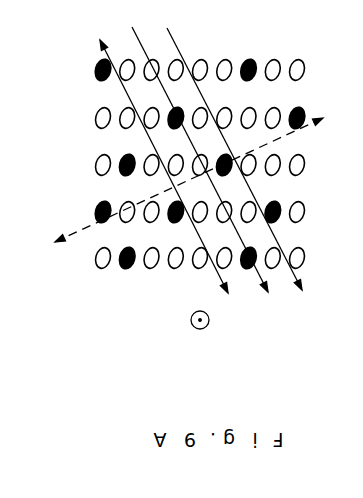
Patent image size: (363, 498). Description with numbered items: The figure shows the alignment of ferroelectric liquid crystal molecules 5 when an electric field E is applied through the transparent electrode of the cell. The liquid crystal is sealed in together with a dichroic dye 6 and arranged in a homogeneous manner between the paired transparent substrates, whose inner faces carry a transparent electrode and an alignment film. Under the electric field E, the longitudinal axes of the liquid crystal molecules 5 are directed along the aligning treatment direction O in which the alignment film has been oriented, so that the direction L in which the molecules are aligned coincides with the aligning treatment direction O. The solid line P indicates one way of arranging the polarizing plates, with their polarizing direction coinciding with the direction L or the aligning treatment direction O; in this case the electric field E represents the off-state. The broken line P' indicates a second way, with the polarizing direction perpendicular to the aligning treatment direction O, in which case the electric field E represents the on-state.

The dichroic dye molecules 6 is at (96, 68).
The liquid crystal molecules 5 is at (96, 165).
The broken line P' is at (186, 180).
The solid line P is at (164, 171).
The direction of liquid crystal molecule alignment L is at (262, 280).
The aligning treatment direction O is at (298, 283).
The electric field E is at (192, 324).